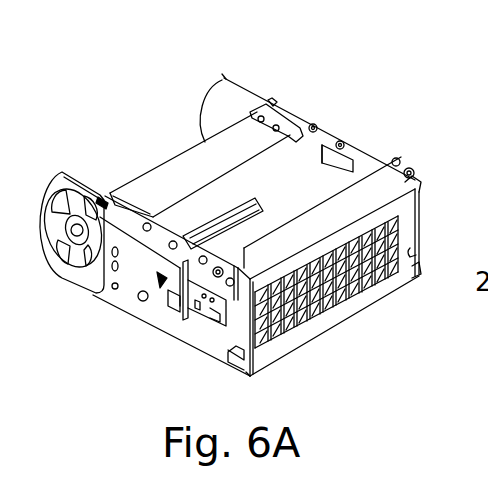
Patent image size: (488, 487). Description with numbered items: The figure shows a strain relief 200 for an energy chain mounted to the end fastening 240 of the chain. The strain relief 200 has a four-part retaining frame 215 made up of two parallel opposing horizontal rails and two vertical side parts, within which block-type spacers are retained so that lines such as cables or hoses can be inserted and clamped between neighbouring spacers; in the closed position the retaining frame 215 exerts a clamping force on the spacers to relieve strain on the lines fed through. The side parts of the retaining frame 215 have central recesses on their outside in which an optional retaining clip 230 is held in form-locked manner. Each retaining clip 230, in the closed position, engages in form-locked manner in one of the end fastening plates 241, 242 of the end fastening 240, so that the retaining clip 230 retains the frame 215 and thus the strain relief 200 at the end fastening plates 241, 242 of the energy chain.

The strain relief 200 is at (451, 206).
The retaining frame 215 is at (359, 192).
The retaining clip 230 is at (170, 320).
The end fastening 240 is at (281, 86).
The end fastening plate 241 is at (110, 290).
The end fastening plate 242 is at (311, 126).